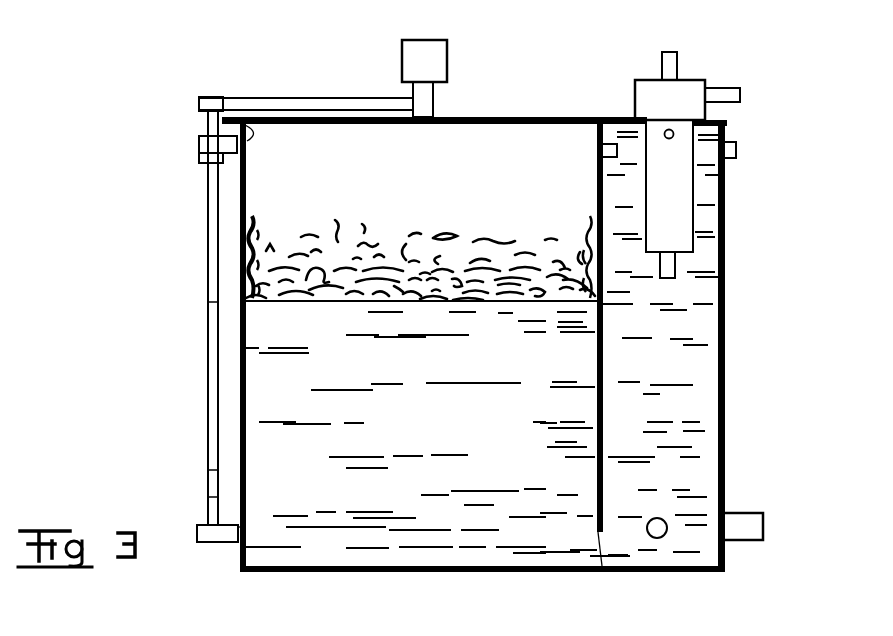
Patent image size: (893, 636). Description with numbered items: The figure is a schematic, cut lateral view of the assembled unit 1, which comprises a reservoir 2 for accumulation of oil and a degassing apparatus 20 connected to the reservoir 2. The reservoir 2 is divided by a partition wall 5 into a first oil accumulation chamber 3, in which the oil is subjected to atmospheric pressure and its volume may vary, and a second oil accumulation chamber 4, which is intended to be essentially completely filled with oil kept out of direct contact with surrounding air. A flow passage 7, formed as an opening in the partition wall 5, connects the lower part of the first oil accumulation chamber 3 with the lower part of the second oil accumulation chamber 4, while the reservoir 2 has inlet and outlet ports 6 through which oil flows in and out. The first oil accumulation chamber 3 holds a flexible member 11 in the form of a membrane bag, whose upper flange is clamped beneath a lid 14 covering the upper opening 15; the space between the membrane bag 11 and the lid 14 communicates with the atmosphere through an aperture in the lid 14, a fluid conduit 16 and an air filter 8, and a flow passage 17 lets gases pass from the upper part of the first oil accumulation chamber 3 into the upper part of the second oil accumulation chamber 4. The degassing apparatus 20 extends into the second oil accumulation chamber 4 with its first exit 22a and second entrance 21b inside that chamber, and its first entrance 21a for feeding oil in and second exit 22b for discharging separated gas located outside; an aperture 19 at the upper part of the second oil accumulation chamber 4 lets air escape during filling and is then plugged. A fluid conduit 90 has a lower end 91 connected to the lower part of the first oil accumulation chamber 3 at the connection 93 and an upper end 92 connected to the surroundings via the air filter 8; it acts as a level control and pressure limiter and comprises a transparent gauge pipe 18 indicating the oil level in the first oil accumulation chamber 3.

The unit 1 is at (568, 64).
The reservoir 2 is at (393, 566).
The first oil accumulation chamber 3 is at (318, 548).
The second oil accumulation chamber 4 is at (724, 370).
The partition wall 5 is at (598, 352).
The inlet and outlet port 6 is at (660, 538).
The flow passage 7 is at (598, 540).
The air filter 8 is at (448, 50).
The flexible member 11 is at (316, 298).
The lid 14 is at (490, 117).
The upper opening 15 is at (237, 155).
The fluid conduit 16 is at (434, 97).
The flow passage 17 is at (600, 150).
The transparent gauge pipe 18 is at (207, 400).
The aperture 19 is at (735, 160).
The degassing apparatus 20 is at (696, 58).
The first entrance 21a is at (668, 52).
The second entrance 21b is at (674, 134).
The first exit 22a is at (672, 280).
The second exit 22b is at (743, 98).
The fluid conduit 90 is at (183, 213).
The lower end 91 is at (240, 540).
The upper end 92 is at (412, 100).
The connection 93 is at (244, 532).